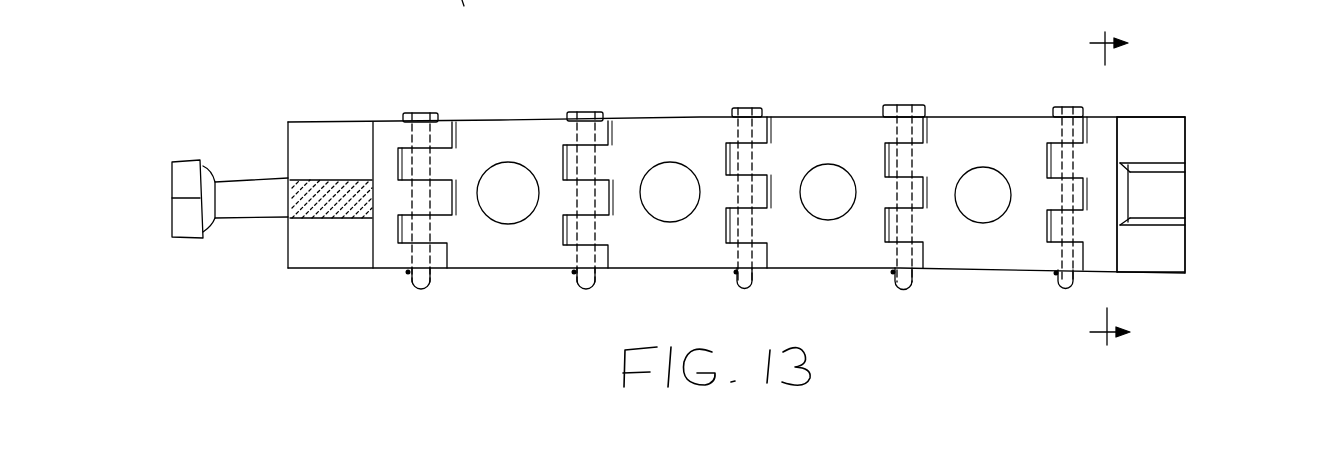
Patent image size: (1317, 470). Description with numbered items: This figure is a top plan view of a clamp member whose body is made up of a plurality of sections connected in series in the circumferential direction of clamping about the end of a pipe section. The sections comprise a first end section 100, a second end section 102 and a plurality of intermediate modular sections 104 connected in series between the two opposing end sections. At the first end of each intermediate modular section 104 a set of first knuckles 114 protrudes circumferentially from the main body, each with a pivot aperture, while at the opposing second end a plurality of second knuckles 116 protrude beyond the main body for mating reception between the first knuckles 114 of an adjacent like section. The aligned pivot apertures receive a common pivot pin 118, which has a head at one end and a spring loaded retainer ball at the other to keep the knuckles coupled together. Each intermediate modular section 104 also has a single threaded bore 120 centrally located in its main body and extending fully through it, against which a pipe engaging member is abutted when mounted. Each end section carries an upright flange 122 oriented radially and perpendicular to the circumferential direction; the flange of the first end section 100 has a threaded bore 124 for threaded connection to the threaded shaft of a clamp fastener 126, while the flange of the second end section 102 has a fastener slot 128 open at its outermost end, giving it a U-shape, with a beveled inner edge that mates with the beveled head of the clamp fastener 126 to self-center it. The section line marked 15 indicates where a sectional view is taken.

The first end section 100 is at (343, 132).
The second end section 102 is at (1144, 112).
The intermediate modular section 104 is at (505, 130).
The first knuckles 114 is at (608, 165).
The second knuckles 116 is at (573, 132).
The pivot pin 118 is at (750, 282).
The threaded bore 120 is at (828, 203).
The upright flange 122 is at (325, 245).
The threaded bore 124 is at (323, 180).
The clamp fastener 126 is at (204, 222).
The fastener slot 128 is at (1177, 210).
The section line 15- 15 is at (1110, 195).